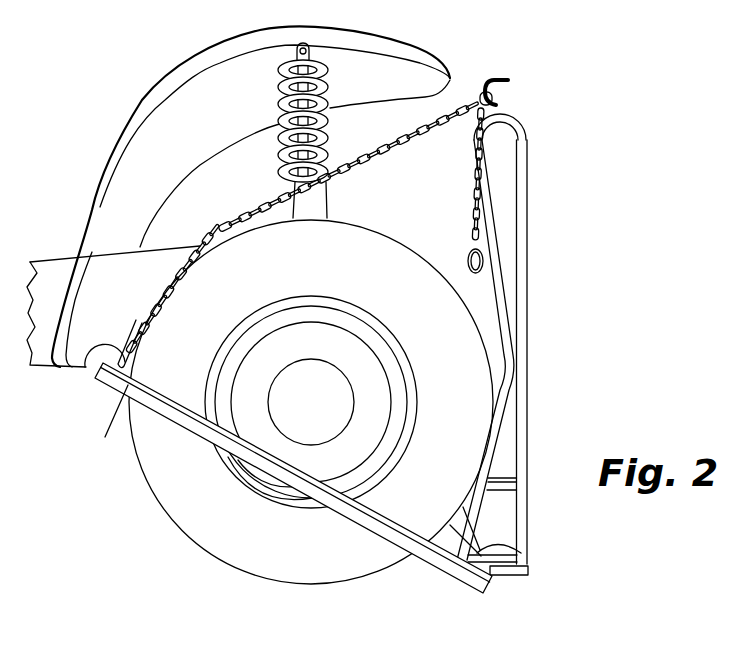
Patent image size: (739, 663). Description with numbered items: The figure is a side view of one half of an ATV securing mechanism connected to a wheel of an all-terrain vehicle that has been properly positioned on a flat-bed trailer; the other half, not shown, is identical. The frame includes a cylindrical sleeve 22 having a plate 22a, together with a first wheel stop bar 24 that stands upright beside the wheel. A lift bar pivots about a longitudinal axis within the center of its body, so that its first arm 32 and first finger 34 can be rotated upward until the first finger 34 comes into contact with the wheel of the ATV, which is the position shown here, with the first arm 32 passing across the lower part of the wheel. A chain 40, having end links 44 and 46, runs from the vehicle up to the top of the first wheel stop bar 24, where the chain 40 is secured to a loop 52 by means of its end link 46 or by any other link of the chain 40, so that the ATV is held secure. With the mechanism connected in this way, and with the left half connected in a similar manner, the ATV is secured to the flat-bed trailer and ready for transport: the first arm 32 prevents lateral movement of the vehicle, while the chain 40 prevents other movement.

The cylindrical sleeve 22 is at (523, 552).
The plate 22a is at (495, 476).
The first wheel stop bar 24 is at (528, 195).
The first arm 32 is at (444, 572).
The first finger 34 is at (108, 430).
The chain 40 is at (362, 162).
The end link 44 is at (87, 368).
The end link 46 is at (473, 120).
The loop 52 is at (506, 82).